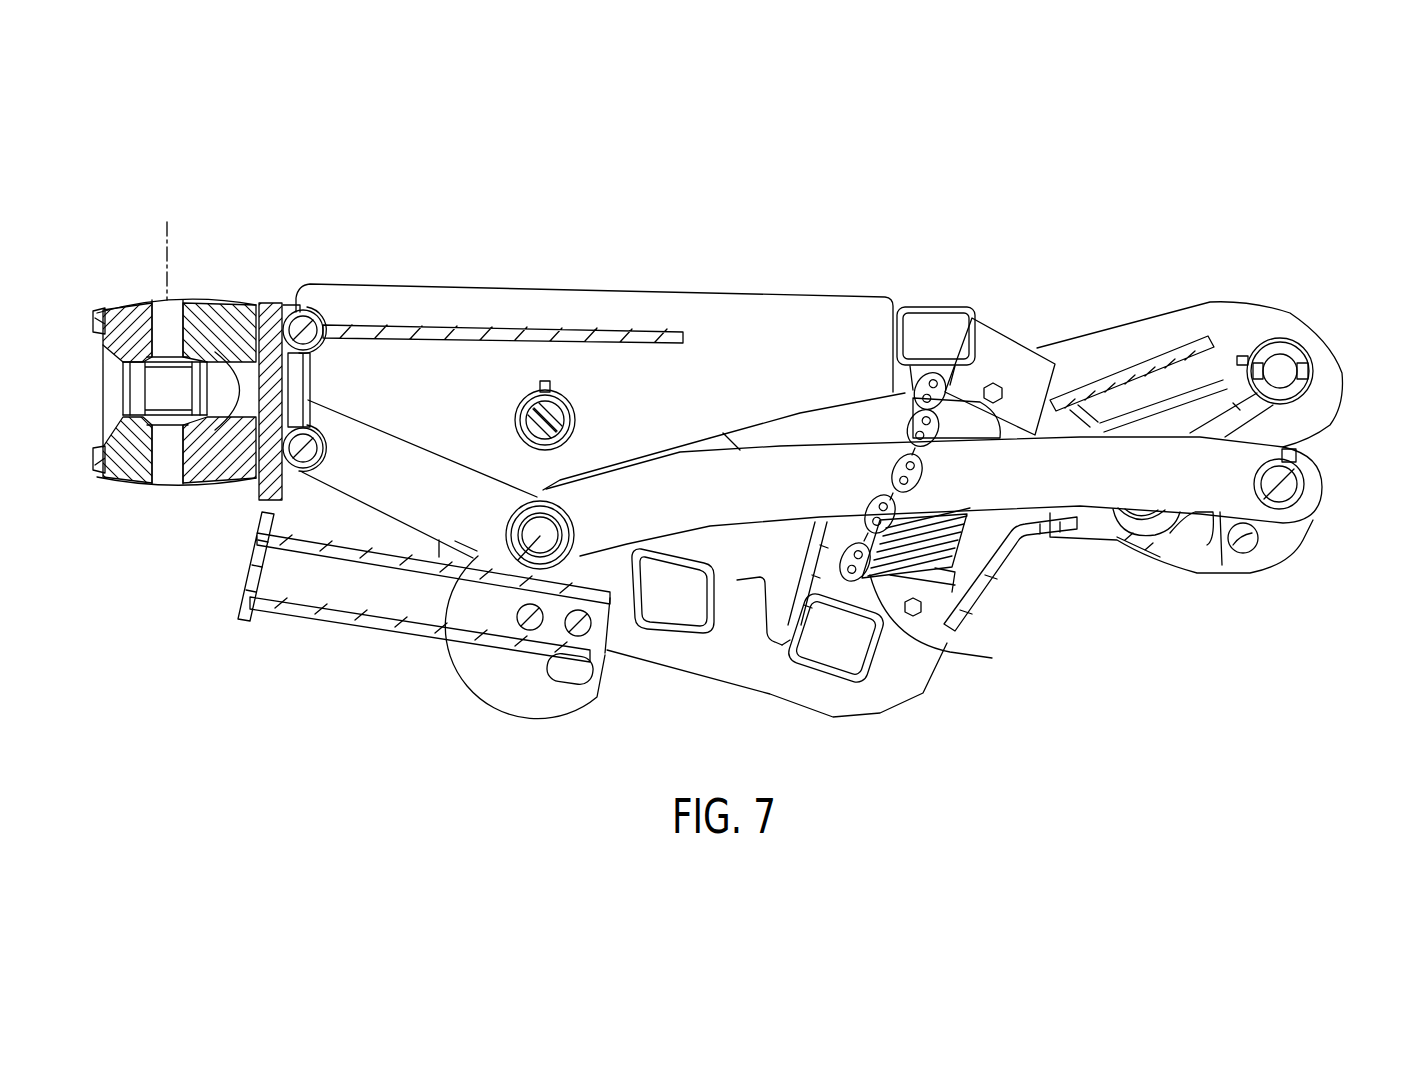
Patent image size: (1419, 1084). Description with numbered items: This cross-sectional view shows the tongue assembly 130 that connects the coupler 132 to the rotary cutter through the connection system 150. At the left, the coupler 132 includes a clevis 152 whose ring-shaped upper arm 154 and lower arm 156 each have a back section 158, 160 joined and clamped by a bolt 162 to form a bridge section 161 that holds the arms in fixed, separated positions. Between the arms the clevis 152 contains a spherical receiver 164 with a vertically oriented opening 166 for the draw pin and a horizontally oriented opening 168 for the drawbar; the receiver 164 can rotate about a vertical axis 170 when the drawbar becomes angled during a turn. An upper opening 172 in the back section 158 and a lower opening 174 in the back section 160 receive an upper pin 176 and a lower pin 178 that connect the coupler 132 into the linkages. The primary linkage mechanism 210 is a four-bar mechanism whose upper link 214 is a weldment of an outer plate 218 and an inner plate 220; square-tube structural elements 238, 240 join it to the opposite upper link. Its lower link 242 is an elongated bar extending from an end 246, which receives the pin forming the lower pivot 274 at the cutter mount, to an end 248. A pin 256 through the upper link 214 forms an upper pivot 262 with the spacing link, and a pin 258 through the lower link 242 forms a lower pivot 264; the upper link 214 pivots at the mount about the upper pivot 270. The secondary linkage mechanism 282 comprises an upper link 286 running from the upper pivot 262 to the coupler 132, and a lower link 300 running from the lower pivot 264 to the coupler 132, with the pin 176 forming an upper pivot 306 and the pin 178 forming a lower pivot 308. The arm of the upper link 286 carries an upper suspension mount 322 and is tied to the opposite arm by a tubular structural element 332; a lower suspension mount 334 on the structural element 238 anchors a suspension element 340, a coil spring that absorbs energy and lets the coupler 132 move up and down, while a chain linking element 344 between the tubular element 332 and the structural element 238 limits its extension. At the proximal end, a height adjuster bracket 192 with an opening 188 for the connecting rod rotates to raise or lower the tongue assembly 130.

The tongue assembly 130 is at (711, 256).
The coupler 132 is at (127, 291).
The connection system 150 is at (1339, 327).
The clevis 152 is at (212, 302).
The upper arm 154 is at (95, 325).
The lower arm 156 is at (100, 456).
The back section 158 is at (250, 318).
The back section 160 is at (245, 456).
The bridge section 161 is at (230, 378).
The bolt 162 is at (280, 305).
The spherical receiver 164 is at (110, 353).
The opening 166 is at (160, 448).
The opening 168 is at (115, 433).
The vertical axis 170 is at (165, 237).
The upper opening 172 is at (312, 316).
The lower opening 174 is at (317, 478).
The upper pin 176 is at (325, 327).
The lower pin 178 is at (321, 452).
The opening 188 is at (1247, 545).
The height adjuster bracket 192 is at (1250, 580).
The primary linkage mechanism 210 is at (706, 678).
The upper link 214 is at (747, 661).
The outer plate 218 is at (903, 677).
The inner plate 220 is at (757, 557).
The structural element 238 is at (830, 681).
The structural element 240 is at (660, 628).
The lower link 242 is at (1063, 484).
The end 246 is at (1323, 500).
The end 248 is at (497, 540).
The pin 256 is at (565, 392).
The pin 258 is at (518, 560).
The upper pivot 262 is at (580, 403).
The lower pivot 264 is at (571, 512).
The upper pivot 270 is at (1285, 339).
The lower pivot 274 is at (1305, 461).
The secondary linkage mechanism 282 is at (379, 534).
The upper link 286 is at (470, 363).
The lower link 300 is at (388, 501).
The upper pivot 306 is at (322, 353).
The lower pivot 308 is at (322, 425).
The upper suspension mount 322 is at (978, 392).
The tubular structural element 332 is at (927, 307).
The lower suspension mount 334 is at (907, 627).
The suspension element 340 is at (953, 540).
The linking element 344 is at (883, 473).